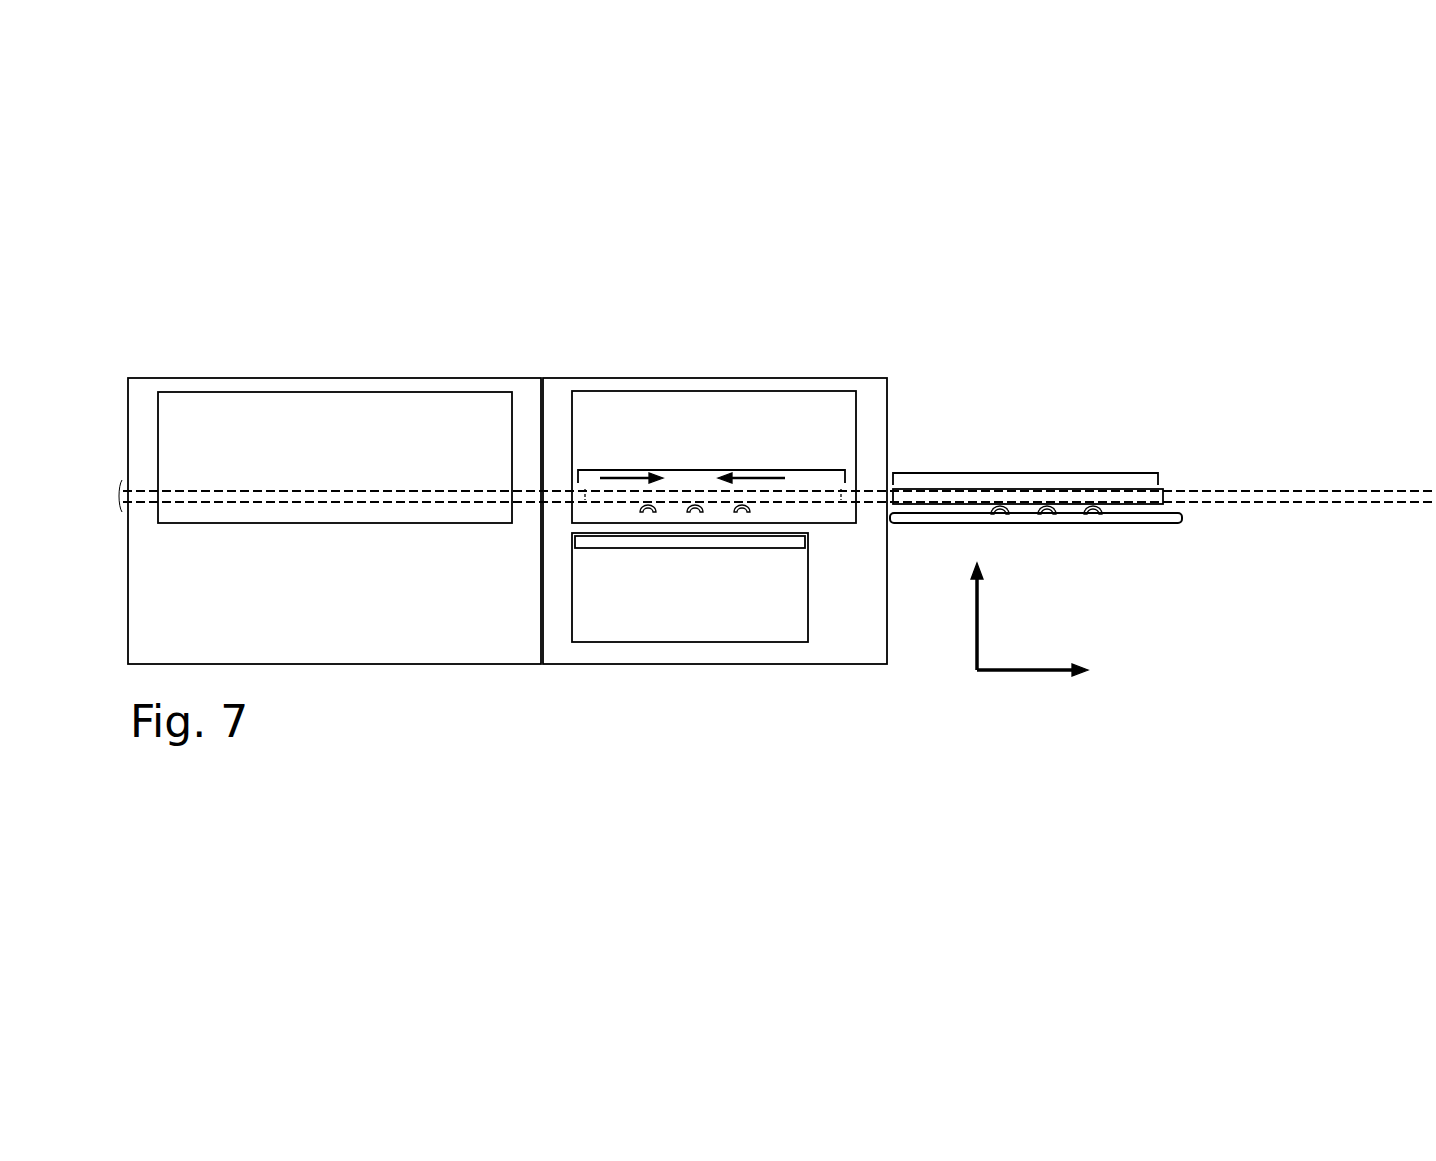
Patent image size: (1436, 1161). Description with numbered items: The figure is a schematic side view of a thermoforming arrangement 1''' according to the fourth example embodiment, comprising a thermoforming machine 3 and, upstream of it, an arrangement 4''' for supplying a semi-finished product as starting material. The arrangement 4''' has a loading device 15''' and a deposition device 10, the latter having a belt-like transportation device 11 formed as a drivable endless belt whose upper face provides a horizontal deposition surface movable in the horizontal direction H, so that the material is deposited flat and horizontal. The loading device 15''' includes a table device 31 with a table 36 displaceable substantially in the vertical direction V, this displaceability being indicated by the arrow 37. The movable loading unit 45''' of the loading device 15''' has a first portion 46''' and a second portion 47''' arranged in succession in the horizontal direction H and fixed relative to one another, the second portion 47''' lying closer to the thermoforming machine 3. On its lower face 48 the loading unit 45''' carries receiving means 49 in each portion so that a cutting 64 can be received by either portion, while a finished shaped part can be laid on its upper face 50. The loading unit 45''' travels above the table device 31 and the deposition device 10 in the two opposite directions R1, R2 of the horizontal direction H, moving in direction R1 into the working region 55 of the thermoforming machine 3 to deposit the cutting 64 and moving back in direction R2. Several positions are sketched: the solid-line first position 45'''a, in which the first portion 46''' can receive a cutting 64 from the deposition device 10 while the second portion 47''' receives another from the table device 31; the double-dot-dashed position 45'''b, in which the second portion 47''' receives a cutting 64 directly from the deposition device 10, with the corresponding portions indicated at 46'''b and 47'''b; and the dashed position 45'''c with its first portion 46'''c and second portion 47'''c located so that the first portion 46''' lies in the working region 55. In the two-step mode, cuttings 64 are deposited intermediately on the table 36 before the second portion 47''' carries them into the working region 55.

The thermoforming arrangement 1''' is at (1349, 307).
The thermoforming machine 3 is at (402, 366).
The arrangement 4''' is at (1302, 721).
The deposition device 10 is at (1052, 552).
The transportation device 11 is at (1143, 524).
The loading device 15''' is at (762, 472).
The table device 31 is at (689, 579).
The table 36 is at (729, 548).
The arrow 37 is at (601, 558).
The loading unit 45''' is at (1012, 411).
The first position of loading unit 45'''a is at (1158, 436).
The position of loading unit 45'''b is at (1368, 425).
The position of loading unit 45'''c is at (405, 644).
The first portion 46''' is at (1071, 427).
The holding member 46'''b is at (1370, 612).
The position of first portion 46'''c is at (344, 384).
The second portion 47''' is at (711, 446).
The plate 47'''b is at (1059, 366).
The plate 47'''c is at (213, 380).
The lower face 48 is at (946, 525).
The receiving means 49 is at (695, 514).
The upper face 50 is at (947, 480).
The working region 55 is at (440, 452).
The cutting 64 is at (1068, 513).
The movement direction R1 is at (748, 476).
The movement direction R2 is at (612, 476).
The vertical direction V is at (975, 617).
The horizontal direction H is at (1050, 671).